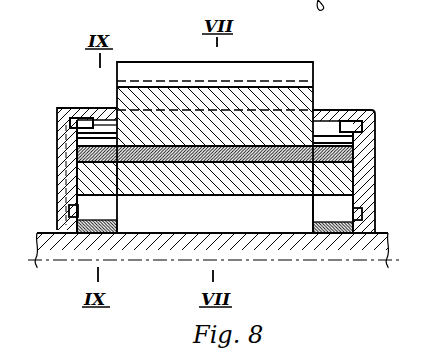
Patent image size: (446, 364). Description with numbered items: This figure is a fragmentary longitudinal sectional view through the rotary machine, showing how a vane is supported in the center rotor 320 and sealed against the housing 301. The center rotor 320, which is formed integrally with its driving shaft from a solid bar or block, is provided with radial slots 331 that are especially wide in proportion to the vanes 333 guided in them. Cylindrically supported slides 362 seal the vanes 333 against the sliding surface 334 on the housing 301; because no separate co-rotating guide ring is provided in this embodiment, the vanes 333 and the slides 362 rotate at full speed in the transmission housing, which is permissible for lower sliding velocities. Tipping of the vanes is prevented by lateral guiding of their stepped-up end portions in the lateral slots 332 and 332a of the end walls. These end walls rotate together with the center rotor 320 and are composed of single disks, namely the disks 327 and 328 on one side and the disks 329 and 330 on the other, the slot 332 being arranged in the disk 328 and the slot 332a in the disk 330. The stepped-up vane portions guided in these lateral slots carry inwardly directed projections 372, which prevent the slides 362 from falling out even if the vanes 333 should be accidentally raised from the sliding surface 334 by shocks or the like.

The housing 301 is at (157, 122).
The sliding surface 334 is at (253, 144).
The slides 362 is at (290, 150).
The inwardly directed projections 372 is at (100, 128).
The disk 327 is at (67, 149).
The disk 329 is at (375, 176).
The lateral slots 332 is at (87, 199).
The lateral slot 332a is at (338, 206).
The disk 328 is at (90, 231).
The center rotor 320 is at (170, 231).
The radial slots 331 is at (263, 210).
The vanes 333 is at (295, 199).
The disk 330 is at (338, 233).